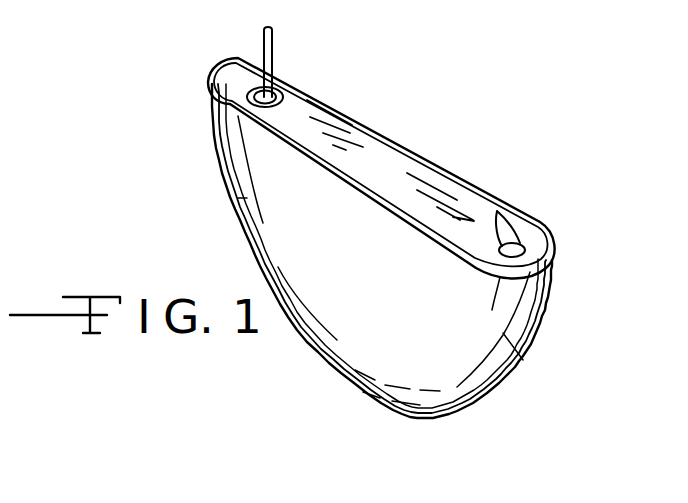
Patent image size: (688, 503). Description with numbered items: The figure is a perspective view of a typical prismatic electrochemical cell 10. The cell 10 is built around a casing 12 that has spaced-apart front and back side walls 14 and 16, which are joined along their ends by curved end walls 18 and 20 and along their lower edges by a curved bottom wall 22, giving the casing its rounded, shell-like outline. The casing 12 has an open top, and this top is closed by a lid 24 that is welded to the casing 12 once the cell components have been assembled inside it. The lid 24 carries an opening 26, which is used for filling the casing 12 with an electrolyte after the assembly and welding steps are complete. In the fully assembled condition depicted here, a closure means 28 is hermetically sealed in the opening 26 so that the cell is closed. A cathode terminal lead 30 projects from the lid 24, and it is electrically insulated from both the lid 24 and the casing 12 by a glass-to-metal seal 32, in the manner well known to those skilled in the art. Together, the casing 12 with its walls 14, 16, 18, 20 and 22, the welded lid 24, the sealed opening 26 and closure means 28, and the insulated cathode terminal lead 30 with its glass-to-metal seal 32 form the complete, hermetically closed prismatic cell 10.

The prismatic electrochemical cell 10 is at (420, 141).
The casing 12 is at (287, 232).
The front side wall 14 is at (341, 343).
The back side wall 16 is at (552, 270).
The curved end wall 18 is at (518, 382).
The curved end wall 20 is at (220, 175).
The curved bottom wall 22 is at (400, 415).
The lid 24 is at (383, 158).
The opening 26 is at (497, 220).
The closure means 28 is at (494, 216).
The cathode terminal lead 30 is at (276, 43).
The glass-to-metal seal 32 is at (277, 93).